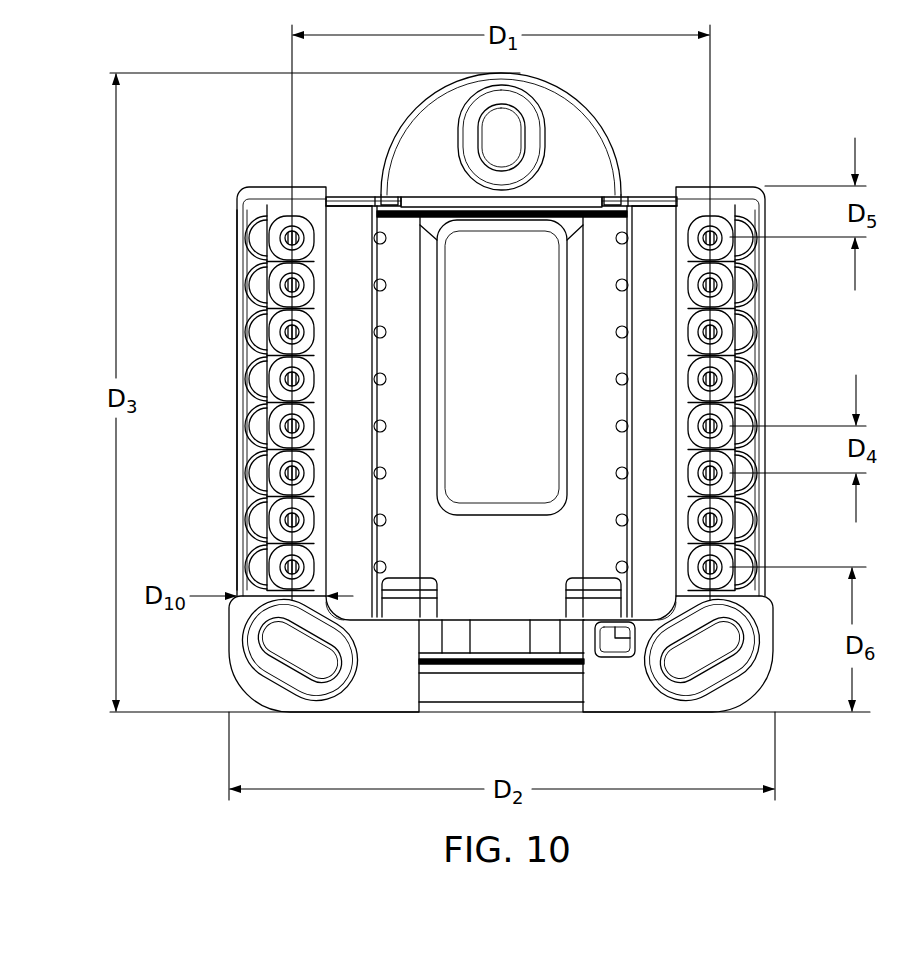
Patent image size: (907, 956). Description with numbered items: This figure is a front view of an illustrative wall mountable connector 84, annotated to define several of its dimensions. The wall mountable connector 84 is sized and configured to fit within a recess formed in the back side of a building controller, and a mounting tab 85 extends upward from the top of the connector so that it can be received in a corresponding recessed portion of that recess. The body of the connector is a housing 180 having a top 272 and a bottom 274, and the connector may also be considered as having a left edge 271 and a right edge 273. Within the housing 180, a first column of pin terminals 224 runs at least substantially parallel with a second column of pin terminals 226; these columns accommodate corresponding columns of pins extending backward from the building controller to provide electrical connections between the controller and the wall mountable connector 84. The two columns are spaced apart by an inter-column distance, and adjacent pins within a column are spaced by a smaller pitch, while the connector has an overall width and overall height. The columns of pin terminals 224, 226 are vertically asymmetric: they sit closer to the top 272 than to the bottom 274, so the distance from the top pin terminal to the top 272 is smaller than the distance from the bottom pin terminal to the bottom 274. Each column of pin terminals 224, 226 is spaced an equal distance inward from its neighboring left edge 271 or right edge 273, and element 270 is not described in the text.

The wall mountable connector 84 is at (515, 415).
The mounting tab 85 is at (578, 107).
The housing 180 is at (640, 196).
The first column of pin terminals 224 is at (280, 212).
The second column of pin terminals 226 is at (718, 210).
The terminal block 270 is at (225, 368).
The left edge 271 is at (240, 310).
The top 272 is at (366, 196).
The right edge 273 is at (765, 305).
The bottom 274 is at (378, 714).